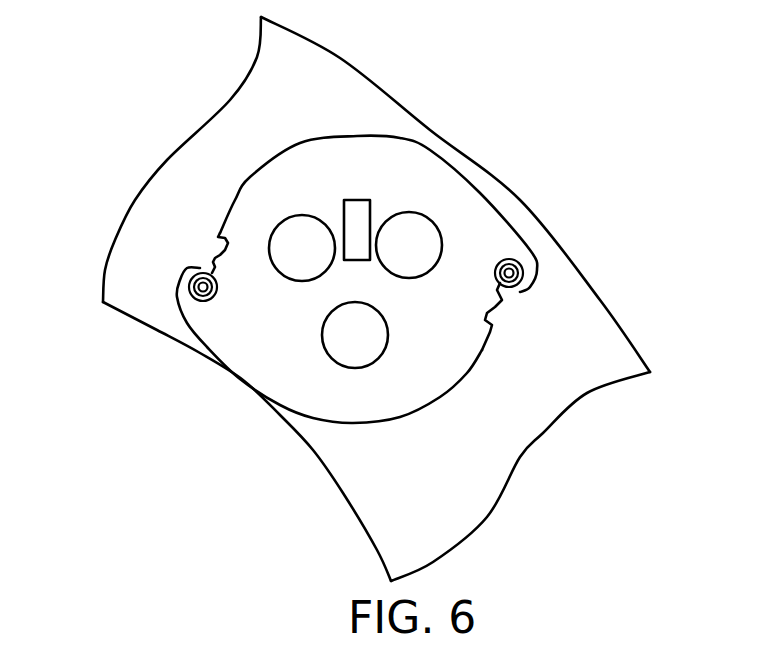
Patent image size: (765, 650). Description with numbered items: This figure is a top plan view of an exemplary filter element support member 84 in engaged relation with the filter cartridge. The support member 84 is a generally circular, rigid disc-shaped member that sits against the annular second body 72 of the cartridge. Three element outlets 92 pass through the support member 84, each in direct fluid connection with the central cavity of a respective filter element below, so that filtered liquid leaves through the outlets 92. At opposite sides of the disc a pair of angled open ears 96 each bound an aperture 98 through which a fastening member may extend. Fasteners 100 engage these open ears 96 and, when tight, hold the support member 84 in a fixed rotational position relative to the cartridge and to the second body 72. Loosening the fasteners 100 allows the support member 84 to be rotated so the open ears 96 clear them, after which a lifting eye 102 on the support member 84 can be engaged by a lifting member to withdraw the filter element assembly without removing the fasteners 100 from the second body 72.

The second body 72 is at (587, 337).
The filter element support member 84 is at (356, 241).
The element outlet 92 is at (409, 220).
The open ear 96 is at (517, 297).
The aperture 98 is at (198, 272).
The fastener 100 is at (522, 258).
The lifting eye 102 is at (342, 208).